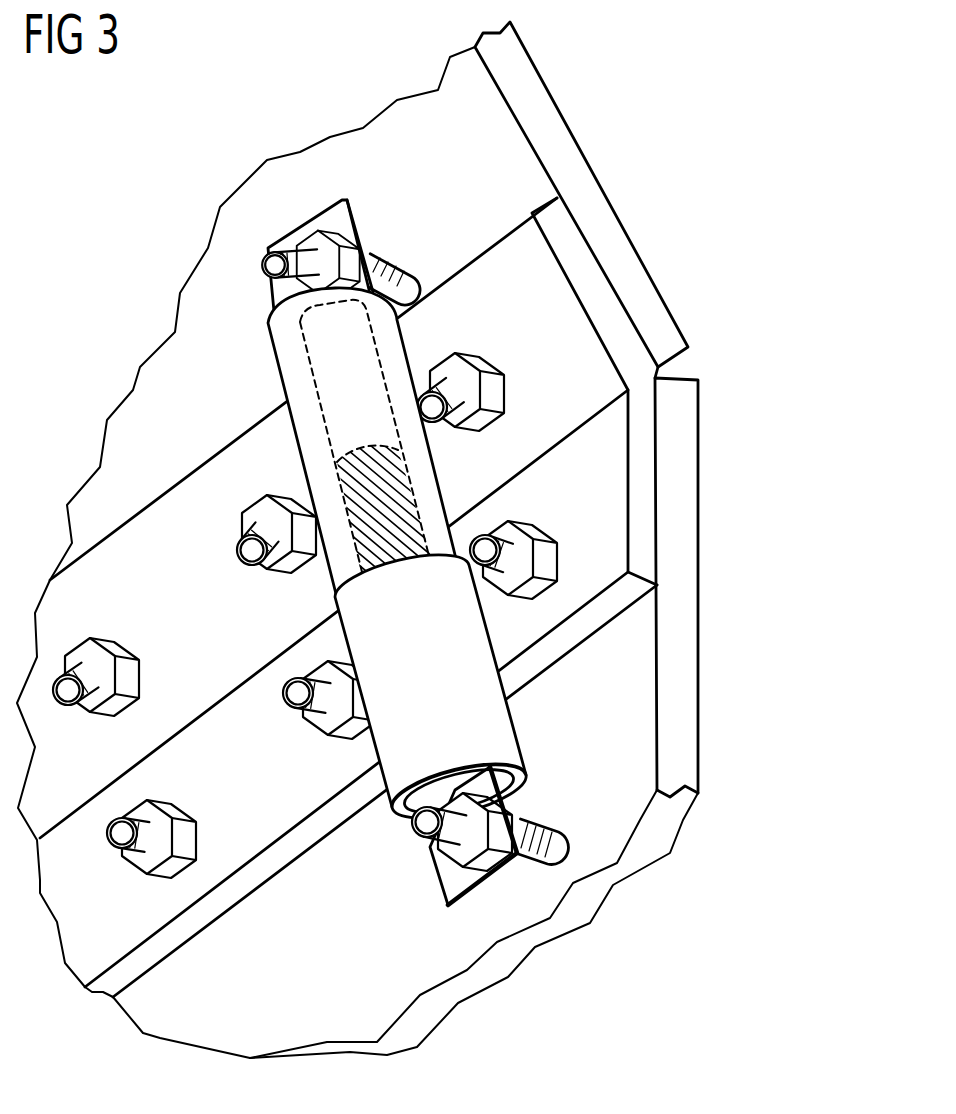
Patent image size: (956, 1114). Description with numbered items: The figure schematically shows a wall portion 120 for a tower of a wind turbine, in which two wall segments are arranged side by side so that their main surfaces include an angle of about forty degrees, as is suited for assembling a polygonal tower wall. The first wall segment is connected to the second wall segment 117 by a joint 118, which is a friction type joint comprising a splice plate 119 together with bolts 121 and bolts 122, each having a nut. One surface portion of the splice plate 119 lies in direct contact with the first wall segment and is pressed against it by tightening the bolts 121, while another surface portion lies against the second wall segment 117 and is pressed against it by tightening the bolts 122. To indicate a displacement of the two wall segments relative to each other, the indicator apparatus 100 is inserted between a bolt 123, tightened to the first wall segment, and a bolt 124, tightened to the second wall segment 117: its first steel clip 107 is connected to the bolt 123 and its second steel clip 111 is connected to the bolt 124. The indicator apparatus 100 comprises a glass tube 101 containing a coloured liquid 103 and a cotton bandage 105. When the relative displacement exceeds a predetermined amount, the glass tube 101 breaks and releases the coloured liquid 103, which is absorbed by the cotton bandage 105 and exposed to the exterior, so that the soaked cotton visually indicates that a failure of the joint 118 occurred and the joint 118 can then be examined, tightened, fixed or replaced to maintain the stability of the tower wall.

The indicator apparatus 100 is at (403, 559).
The glass tube 101 is at (312, 442).
The coloured liquid 103 is at (387, 472).
The cotton bandage 105 is at (502, 730).
The first steel clip 107 is at (322, 227).
The second steel clip 111 is at (442, 887).
The second wall segment 117 is at (430, 972).
The joint 118 is at (725, 342).
The splice plate 119 is at (205, 487).
The wall portion 120 is at (742, 122).
The bolts 121 is at (483, 375).
The bolts 122 is at (522, 527).
The bolt 123 is at (282, 300).
The bolt 124 is at (443, 850).